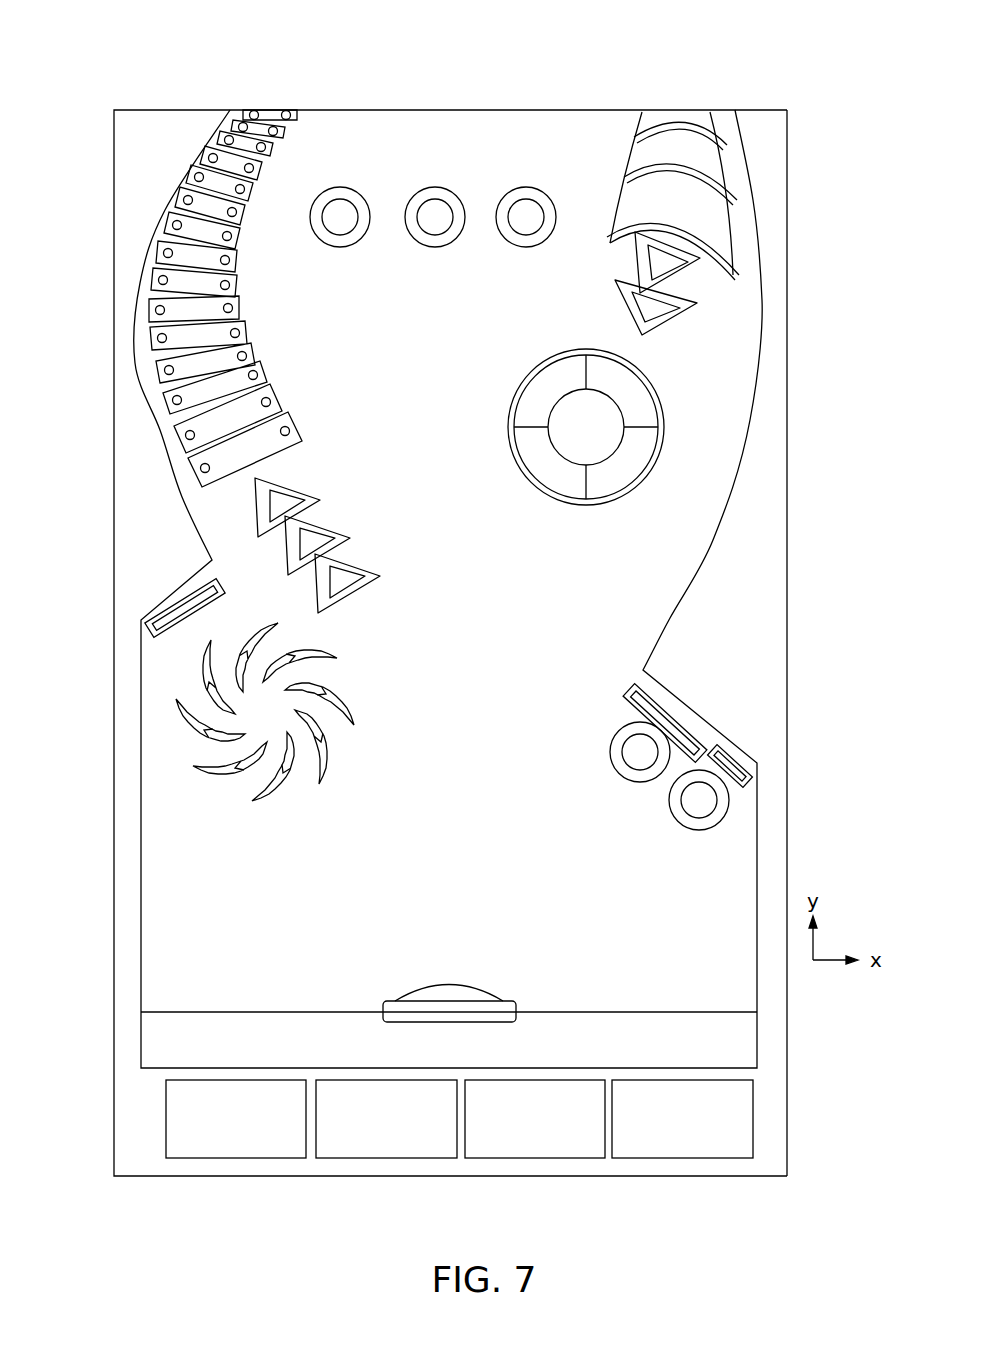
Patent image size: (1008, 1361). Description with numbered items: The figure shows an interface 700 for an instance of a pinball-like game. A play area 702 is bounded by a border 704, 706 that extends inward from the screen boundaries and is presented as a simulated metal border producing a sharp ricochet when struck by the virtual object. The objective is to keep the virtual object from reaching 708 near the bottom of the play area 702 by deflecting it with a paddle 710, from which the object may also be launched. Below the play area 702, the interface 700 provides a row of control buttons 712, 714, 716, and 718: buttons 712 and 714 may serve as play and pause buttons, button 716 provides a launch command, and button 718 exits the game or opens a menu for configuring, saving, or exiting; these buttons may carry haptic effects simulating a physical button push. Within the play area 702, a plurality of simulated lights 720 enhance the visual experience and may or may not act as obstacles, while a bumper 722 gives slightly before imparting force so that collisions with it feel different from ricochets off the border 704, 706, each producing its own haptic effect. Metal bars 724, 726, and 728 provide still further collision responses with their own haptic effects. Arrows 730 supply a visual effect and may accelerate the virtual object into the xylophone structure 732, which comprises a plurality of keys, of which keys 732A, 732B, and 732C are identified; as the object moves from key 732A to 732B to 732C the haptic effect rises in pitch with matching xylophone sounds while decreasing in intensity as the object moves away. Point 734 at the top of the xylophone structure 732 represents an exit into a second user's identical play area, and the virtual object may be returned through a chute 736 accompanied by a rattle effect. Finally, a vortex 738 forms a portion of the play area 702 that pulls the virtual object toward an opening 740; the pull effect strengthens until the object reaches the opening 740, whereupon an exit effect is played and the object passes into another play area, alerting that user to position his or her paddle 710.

The interface 700 is at (578, 78).
The play area 702 is at (215, 951).
The border 704 is at (113, 858).
The border 706 is at (788, 1030).
The reaching point 708 is at (659, 1010).
The paddle 710 is at (478, 984).
The control button 712 is at (222, 1131).
The control button 714 is at (372, 1131).
The control button 716 is at (521, 1131).
The control button 718 is at (668, 1131).
The simulated lights 720 is at (342, 188).
The bumper 722 is at (509, 428).
The metal bar 724 is at (622, 700).
The metal bar 726 is at (672, 808).
The metal bar 728 is at (222, 588).
The arrows 730 is at (350, 527).
The xylophone structure 732 is at (268, 276).
The key 732A is at (306, 432).
The key 732B is at (242, 284).
The key 732C is at (264, 170).
The point 734 is at (268, 108).
The chute 736 is at (702, 270).
The vortex 738 is at (282, 698).
The opening 740 is at (248, 717).